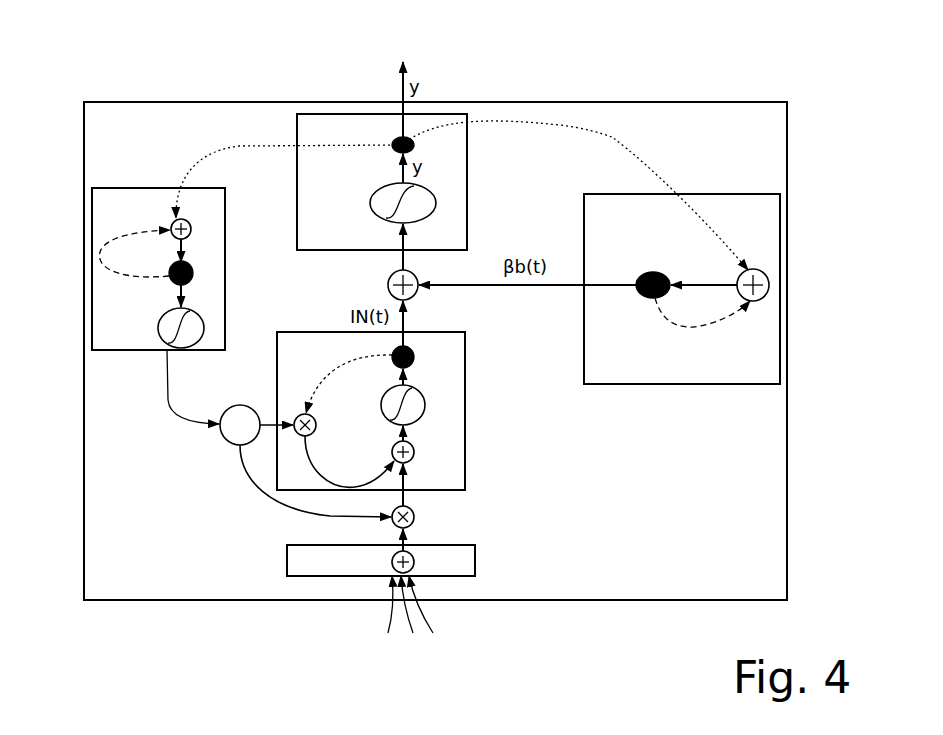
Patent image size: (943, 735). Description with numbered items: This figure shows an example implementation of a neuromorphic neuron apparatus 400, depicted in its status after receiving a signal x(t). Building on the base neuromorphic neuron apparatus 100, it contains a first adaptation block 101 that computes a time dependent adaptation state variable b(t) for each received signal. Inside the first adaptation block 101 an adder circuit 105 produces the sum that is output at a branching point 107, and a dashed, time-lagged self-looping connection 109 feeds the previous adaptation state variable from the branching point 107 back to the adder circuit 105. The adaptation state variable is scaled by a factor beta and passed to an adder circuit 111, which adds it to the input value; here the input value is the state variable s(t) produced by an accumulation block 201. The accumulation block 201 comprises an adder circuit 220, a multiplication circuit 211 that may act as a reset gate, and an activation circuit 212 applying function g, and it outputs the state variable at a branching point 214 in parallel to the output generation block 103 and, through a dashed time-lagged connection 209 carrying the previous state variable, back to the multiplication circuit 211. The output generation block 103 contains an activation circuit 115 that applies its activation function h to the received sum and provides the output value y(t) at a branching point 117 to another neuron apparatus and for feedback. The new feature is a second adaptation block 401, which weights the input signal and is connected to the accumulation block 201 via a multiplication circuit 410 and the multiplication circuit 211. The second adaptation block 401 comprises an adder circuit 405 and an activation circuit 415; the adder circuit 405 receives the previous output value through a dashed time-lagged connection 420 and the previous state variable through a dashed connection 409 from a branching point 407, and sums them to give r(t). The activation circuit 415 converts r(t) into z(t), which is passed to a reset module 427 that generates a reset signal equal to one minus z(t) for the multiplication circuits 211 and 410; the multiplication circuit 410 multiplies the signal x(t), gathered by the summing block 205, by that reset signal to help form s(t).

The neuromorphic neuron apparatus 400 is at (536, 89).
The neuromorphic neuron apparatus 100 is at (612, 137).
The first adaptation block 101 is at (771, 376).
The output generation block 103 is at (343, 243).
The adder circuit 105 is at (760, 268).
The branching point 107 is at (657, 265).
The connection 109 is at (668, 326).
The adder circuit 111 is at (388, 284).
The activation circuit 115 is at (436, 196).
The branching point 117 is at (403, 137).
The accumulation block 201 is at (465, 438).
The summing block 205 is at (475, 558).
The connection 209 is at (345, 355).
The multiplication circuit 211 is at (316, 430).
The activation circuit 212 is at (422, 398).
The branching point 214 is at (412, 352).
The adder circuit 220 is at (414, 452).
The second adaptation block 401 is at (170, 212).
The adder circuit 405 is at (92, 191).
The branching point 407 is at (171, 281).
The connection 409 is at (130, 276).
The multiplication circuit 410 is at (414, 514).
The activation circuit 415 is at (154, 340).
The connection 420 is at (237, 146).
The reset module 427 is at (222, 440).